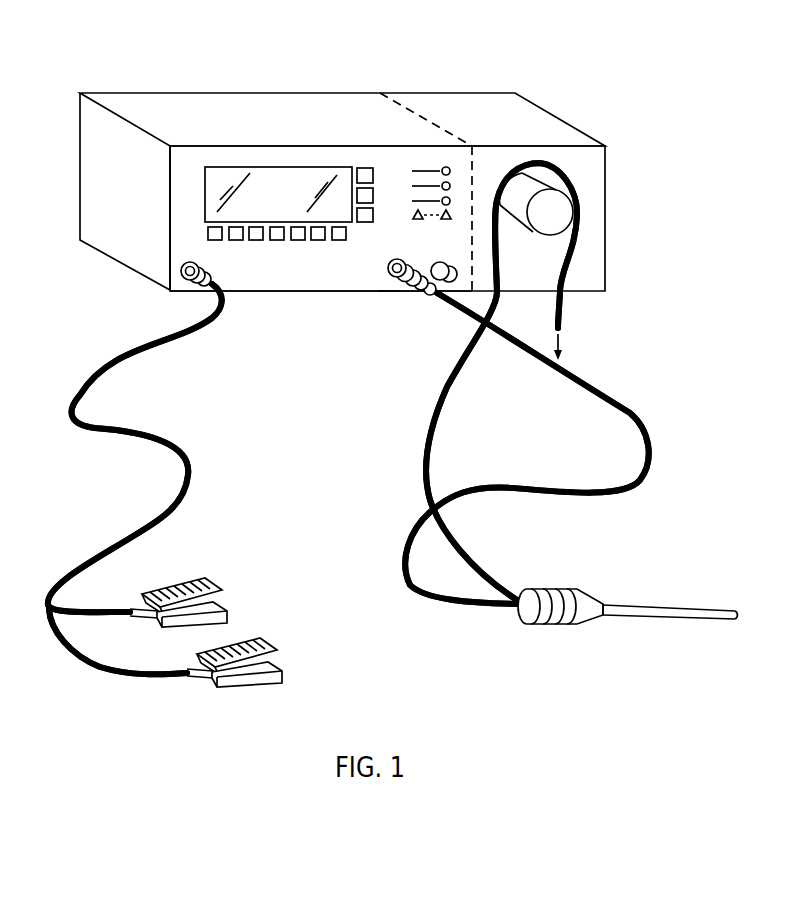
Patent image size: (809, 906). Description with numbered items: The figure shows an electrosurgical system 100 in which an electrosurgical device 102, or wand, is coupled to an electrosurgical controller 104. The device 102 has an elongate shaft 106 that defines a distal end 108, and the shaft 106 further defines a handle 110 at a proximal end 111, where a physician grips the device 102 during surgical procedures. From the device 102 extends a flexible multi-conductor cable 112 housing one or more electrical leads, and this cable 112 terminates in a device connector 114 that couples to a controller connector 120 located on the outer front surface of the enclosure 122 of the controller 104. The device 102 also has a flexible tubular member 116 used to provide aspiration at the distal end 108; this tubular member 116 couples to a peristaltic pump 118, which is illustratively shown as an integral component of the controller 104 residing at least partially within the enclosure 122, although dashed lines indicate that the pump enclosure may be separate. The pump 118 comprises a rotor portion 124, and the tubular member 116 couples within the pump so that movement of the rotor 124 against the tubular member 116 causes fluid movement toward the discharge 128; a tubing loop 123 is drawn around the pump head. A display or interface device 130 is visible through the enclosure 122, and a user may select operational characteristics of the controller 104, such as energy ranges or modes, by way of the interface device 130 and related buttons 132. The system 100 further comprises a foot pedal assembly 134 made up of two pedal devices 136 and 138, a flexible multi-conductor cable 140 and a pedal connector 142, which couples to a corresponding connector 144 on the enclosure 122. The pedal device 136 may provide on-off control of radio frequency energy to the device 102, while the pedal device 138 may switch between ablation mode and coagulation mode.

The electrosurgical system 100 is at (679, 84).
The electrosurgical device 102 is at (649, 604).
The electrosurgical controller 104 is at (290, 101).
The elongate shaft 106 is at (667, 607).
The distal end 108 is at (744, 595).
The handle 110 is at (551, 642).
The proximal end 111 is at (607, 615).
The flexible multi-conductor cable 112 is at (630, 413).
The device connector 114 is at (430, 297).
The flexible tubular member 116 is at (483, 570).
The peristaltic pump 118 is at (553, 181).
The controller connector 120 is at (388, 291).
The enclosure 122 is at (343, 273).
The tubing loop 123 is at (557, 174).
The rotor portion 124 is at (562, 218).
The discharge 128 is at (589, 330).
The interface device 130 is at (297, 203).
The buttons 132 is at (378, 222).
The foot pedal assembly 134 is at (242, 563).
The pedal device 136 is at (227, 617).
The pedal device 138 is at (283, 679).
The flexible multi-conductor cable 140 is at (112, 432).
The pedal connector 142 is at (184, 288).
The connector 144 is at (181, 270).